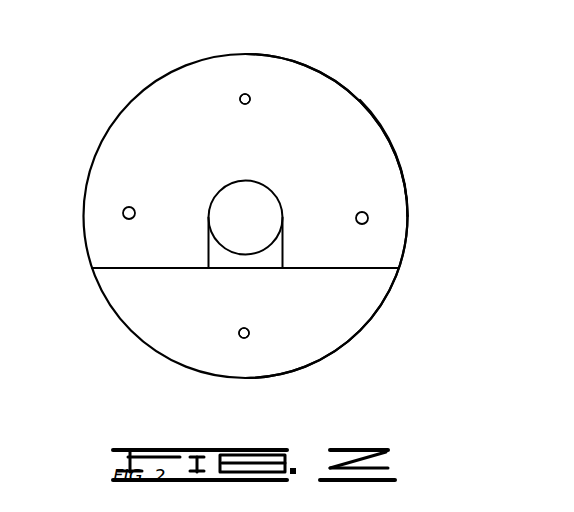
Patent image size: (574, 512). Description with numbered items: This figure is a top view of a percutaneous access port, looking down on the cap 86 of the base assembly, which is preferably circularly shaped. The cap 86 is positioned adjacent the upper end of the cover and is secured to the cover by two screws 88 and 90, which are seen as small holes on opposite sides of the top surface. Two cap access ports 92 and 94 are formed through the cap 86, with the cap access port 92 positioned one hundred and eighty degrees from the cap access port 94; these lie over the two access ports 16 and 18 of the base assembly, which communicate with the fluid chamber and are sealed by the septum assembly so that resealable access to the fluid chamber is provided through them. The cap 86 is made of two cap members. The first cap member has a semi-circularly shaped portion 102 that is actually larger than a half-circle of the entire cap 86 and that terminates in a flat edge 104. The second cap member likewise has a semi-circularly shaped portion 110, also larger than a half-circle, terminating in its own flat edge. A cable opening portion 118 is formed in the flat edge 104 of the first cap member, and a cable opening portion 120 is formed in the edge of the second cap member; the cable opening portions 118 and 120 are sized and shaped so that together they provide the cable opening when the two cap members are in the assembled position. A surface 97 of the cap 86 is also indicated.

The semi-circularly shaped portion 102 is at (158, 103).
The cap 86 is at (358, 123).
The surface 97 is at (382, 172).
The semi-circularly shaped portion 110 is at (312, 367).
The flat edge 104 is at (148, 271).
The cable opening portion 118 is at (263, 189).
The cable opening portion 120 is at (268, 259).
The access port 16 is at (250, 99).
The cap access port 92 is at (240, 100).
The screw 88 is at (131, 206).
The screw 90 is at (355, 215).
The access port 18 is at (250, 330).
The cap access port 94 is at (238, 337).